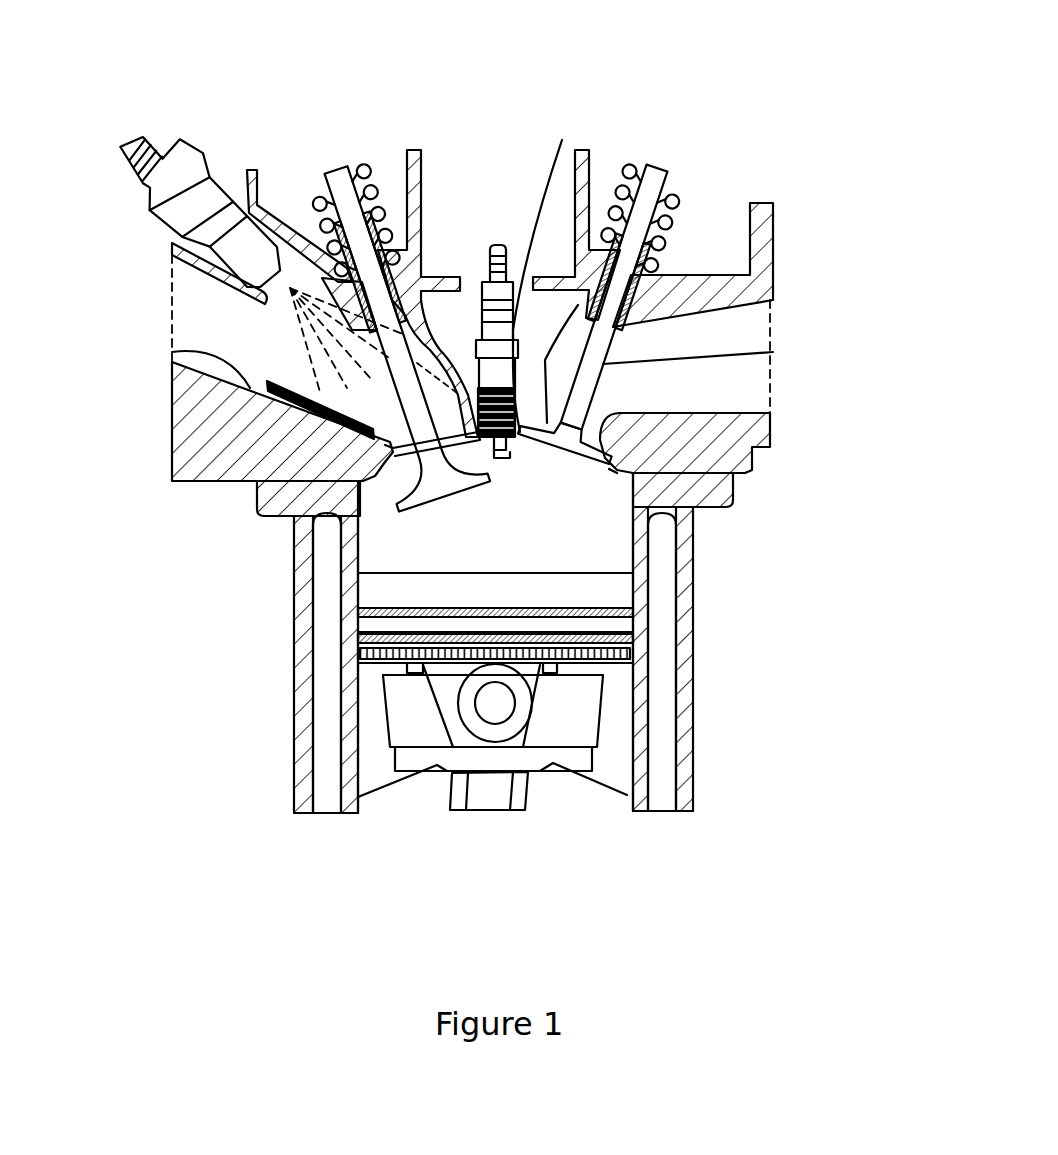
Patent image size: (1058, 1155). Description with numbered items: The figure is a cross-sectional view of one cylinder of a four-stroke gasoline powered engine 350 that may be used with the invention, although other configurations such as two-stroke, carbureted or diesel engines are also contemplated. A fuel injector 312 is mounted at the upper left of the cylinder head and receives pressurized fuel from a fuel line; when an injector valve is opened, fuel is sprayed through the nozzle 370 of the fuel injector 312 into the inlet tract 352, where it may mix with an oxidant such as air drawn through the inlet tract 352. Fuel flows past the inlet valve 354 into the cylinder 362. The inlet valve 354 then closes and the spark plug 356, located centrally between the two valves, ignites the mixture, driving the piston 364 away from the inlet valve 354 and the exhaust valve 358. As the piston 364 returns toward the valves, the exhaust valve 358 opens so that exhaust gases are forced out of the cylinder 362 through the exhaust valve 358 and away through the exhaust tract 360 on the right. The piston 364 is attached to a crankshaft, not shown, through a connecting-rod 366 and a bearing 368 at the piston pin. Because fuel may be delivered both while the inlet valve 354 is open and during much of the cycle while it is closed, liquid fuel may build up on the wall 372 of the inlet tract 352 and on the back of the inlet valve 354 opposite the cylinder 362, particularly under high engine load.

The four-stroke gasoline powered engine 350 is at (782, 110).
The fuel injector 312 is at (156, 216).
The inlet tract 352 is at (238, 340).
The inlet valve 354 is at (455, 510).
The spark plug 356 is at (503, 248).
The exhaust valve 358 is at (772, 355).
The exhaust tract 360 is at (726, 390).
The cylinder 362 is at (556, 538).
The piston 364 is at (590, 580).
The connecting-rod 366 is at (530, 804).
The bearing 368 is at (513, 707).
The nozzle 370 is at (262, 313).
The wall of the inlet tract 372 is at (172, 352).